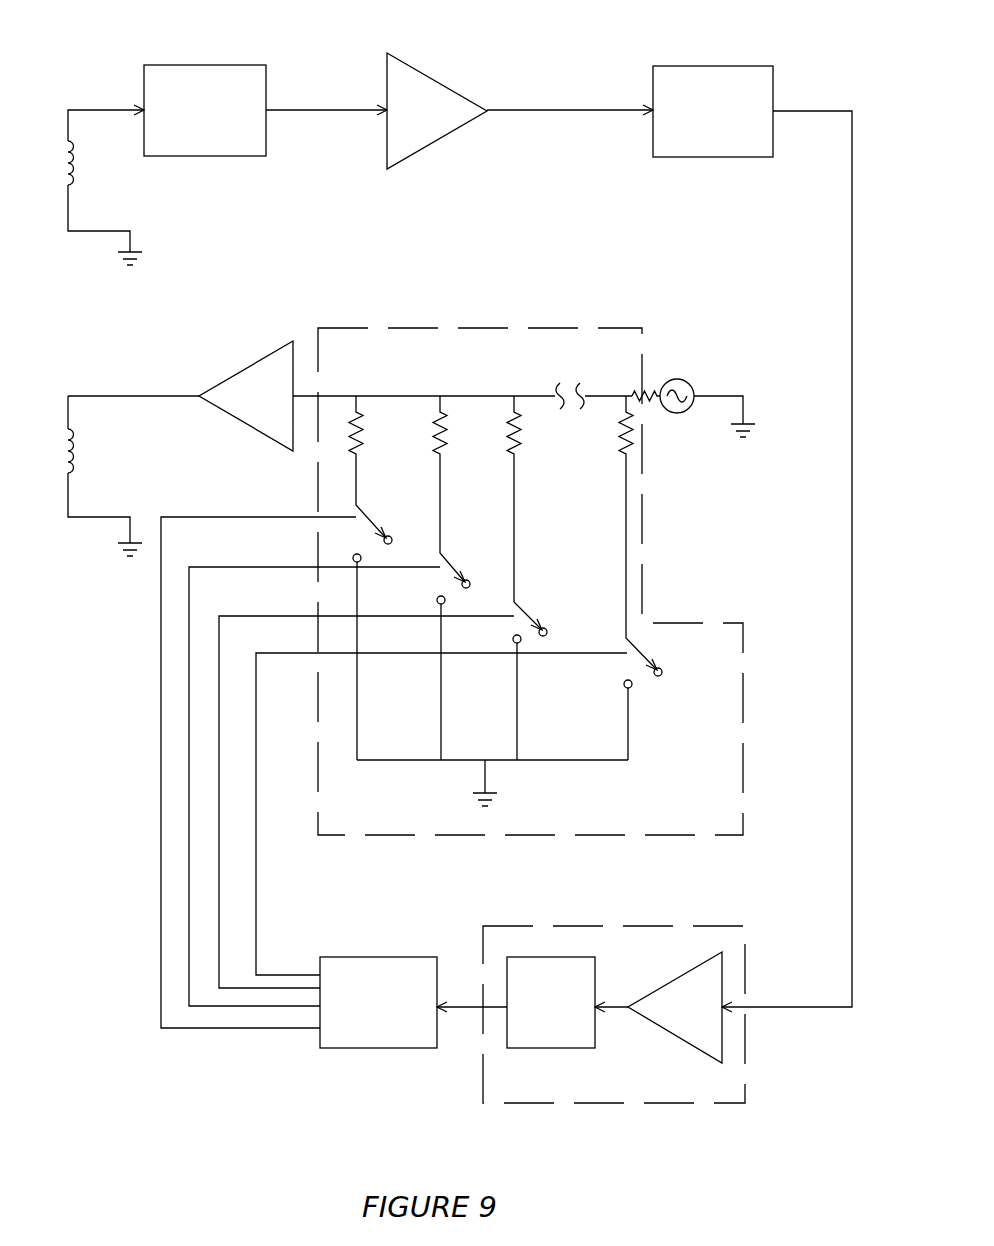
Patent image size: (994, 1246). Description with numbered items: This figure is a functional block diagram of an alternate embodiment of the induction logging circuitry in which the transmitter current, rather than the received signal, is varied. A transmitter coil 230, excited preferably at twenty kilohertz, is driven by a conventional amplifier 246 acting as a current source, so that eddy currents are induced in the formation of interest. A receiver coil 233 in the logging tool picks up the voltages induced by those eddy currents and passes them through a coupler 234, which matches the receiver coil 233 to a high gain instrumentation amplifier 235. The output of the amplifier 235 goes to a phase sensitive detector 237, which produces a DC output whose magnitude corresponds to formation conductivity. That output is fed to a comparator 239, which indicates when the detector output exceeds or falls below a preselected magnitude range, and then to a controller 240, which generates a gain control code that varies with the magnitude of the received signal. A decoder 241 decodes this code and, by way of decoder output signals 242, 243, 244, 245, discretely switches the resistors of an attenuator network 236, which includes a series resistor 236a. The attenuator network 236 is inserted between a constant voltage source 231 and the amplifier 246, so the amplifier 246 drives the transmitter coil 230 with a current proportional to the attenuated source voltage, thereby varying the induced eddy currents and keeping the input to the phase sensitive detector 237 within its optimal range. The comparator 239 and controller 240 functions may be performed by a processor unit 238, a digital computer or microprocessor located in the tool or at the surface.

The transmitter coil 230 is at (77, 455).
The constant voltage source 231 is at (688, 378).
The receiver coil 233 is at (78, 173).
The coupler 234 is at (213, 65).
The high gain instrumentation amplifier 235 is at (433, 78).
The attenuator network 236 is at (673, 835).
The series resistor 236a is at (646, 388).
The phase sensitive detector 237 is at (730, 66).
The processor unit 238 is at (745, 1072).
The comparator 239 is at (683, 1042).
The controller 240 is at (547, 1049).
The decoder 241 is at (374, 1049).
The decoder output signal 242 is at (161, 860).
The decoder output signal 243 is at (190, 820).
The decoder output signal 244 is at (219, 888).
The decoder output signal 245 is at (257, 850).
The amplifier 246 is at (244, 372).